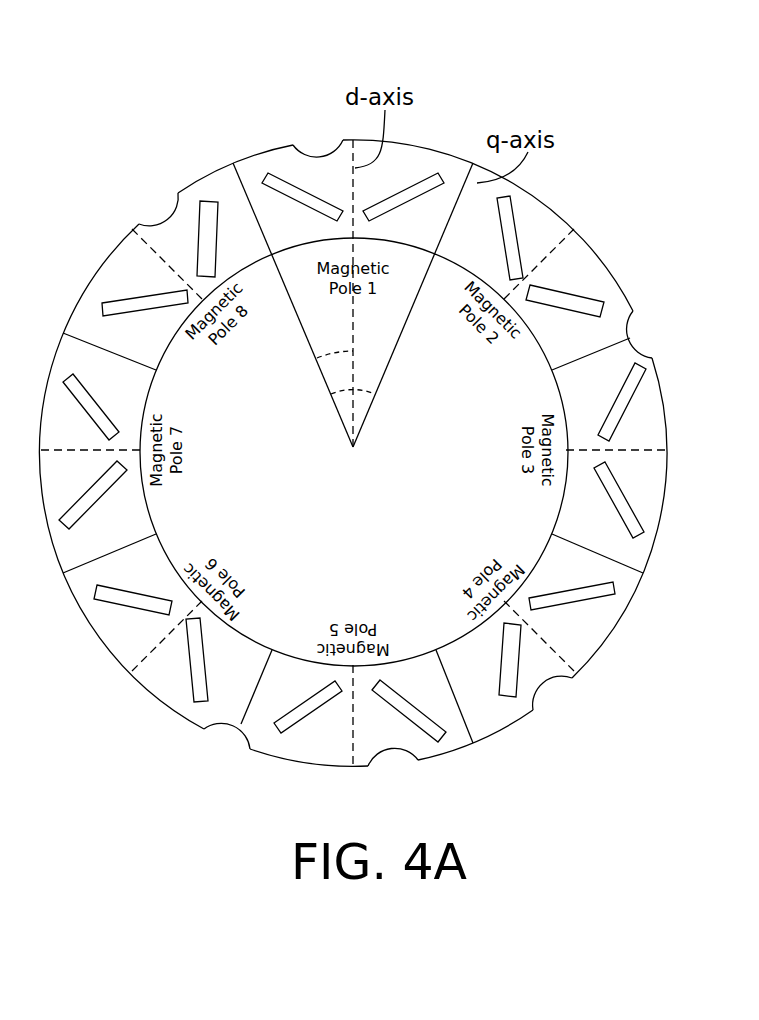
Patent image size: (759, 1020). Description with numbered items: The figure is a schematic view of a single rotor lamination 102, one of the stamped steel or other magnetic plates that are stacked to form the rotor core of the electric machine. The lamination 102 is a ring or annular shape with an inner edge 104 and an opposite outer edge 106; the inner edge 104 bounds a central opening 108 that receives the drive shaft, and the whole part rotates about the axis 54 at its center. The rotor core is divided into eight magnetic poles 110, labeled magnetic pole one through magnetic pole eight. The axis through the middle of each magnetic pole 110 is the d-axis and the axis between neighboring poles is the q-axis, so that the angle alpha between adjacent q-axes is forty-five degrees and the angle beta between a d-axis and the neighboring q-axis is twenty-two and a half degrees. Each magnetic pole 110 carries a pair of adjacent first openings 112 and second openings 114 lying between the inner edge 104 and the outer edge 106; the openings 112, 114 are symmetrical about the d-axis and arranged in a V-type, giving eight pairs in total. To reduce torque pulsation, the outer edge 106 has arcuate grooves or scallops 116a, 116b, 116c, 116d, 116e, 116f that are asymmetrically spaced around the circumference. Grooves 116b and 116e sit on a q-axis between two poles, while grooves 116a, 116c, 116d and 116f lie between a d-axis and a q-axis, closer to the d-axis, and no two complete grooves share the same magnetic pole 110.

The rotor lamination 102 is at (615, 170).
The inner edge 104 is at (163, 550).
The outer edge 106 is at (98, 270).
The central opening 108 is at (367, 555).
The magnetic pole 110 is at (317, 238).
The first opening 112 is at (233, 163).
The second opening 114 is at (435, 162).
The groove 116a is at (319, 152).
The groove 116b is at (631, 322).
The groove 116c is at (545, 686).
The groove 116d is at (390, 755).
The groove 116e is at (225, 728).
The groove 116f is at (170, 216).
The axis 54 is at (346, 400).